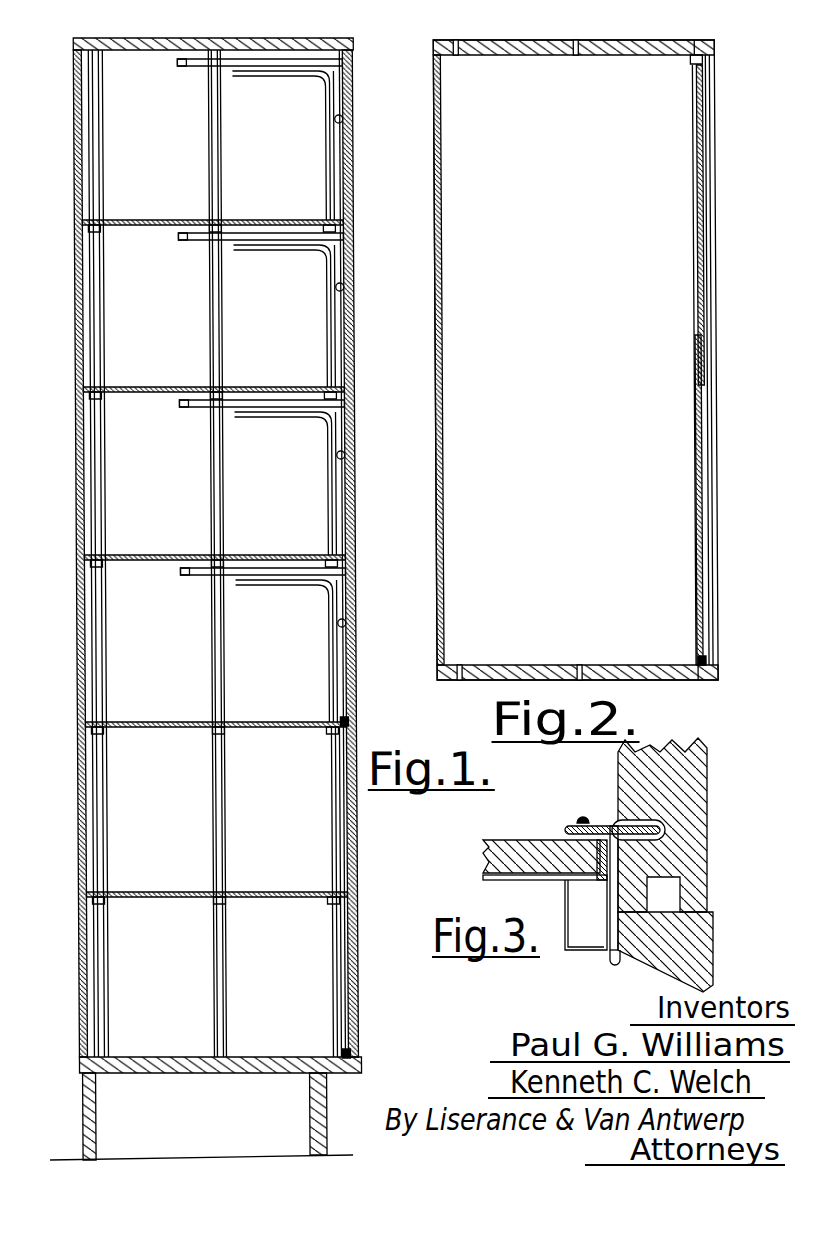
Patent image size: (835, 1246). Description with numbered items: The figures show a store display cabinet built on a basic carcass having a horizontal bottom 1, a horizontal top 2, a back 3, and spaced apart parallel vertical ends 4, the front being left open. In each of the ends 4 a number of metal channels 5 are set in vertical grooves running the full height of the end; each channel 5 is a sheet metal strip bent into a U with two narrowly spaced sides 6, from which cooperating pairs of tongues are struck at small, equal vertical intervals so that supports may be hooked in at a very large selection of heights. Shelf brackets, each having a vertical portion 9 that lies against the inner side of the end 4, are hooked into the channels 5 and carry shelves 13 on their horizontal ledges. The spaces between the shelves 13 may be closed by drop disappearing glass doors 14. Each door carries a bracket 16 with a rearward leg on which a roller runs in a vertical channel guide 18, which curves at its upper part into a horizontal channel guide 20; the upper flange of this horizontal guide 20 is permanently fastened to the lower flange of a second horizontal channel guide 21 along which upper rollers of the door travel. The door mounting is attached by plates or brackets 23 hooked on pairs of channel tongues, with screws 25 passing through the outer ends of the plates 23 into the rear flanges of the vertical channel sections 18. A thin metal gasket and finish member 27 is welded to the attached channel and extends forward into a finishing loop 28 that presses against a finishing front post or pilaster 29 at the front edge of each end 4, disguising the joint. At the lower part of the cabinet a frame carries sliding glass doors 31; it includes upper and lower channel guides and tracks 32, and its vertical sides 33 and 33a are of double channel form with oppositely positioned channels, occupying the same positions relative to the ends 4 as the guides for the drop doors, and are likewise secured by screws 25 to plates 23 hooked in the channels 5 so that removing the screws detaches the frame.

In FIG. 1, the bottom 1 is at (185, 1072).
In FIG. 2, the bottom 1 is at (470, 465).
In FIG. 1, the top 2 is at (200, 41).
In FIG. 1, the back 3 is at (74, 520).
In FIG. 2, the back 3 is at (432, 540).
In FIG. 1, the ends 4 is at (120, 630).
In FIG. 2, the ends 4 is at (540, 40).
In FIG. 3, the ends 4 is at (700, 782).
In FIG. 1, the metal channels 5 is at (102, 502).
In FIG. 2, the metal channels 5 is at (455, 42).
In FIG. 3, the metal channels 5 is at (660, 830).
In FIG. 3, the sides 6 is at (665, 826).
In FIG. 1, the vertical portion 9 is at (318, 226).
In FIG. 1, the shelves 13 is at (155, 220).
In FIG. 1, the glass doors 14 is at (350, 152).
In FIG. 1, the bracket 16 is at (342, 120).
In FIG. 1, the channel guide 18 is at (340, 185).
In FIG. 1, the horizontal channel guide 20 is at (262, 77).
In FIG. 1, the horizontal channel guide 21 is at (268, 62).
In FIG. 1, the brackets 23 is at (330, 105).
In FIG. 3, the brackets 23 is at (612, 825).
In FIG. 3, the screws 25 is at (582, 820).
In FIG. 3, the gasket and finish member 27 is at (605, 908).
In FIG. 3, the finishing loop 28 is at (612, 962).
In FIG. 3, the finishing front post 29 is at (700, 948).
In FIG. 1, the sliding glass doors 31 is at (334, 938).
In FIG. 2, the sliding glass doors 31 is at (704, 270).
In FIG. 3, the sliding glass doors 31 is at (520, 850).
In FIG. 1, the channel guides and tracks 32 is at (350, 722).
In FIG. 2, the vertical side 33 is at (708, 662).
In FIG. 3, the vertical side 33 is at (570, 883).
In FIG. 2, the vertical side 33a is at (698, 65).